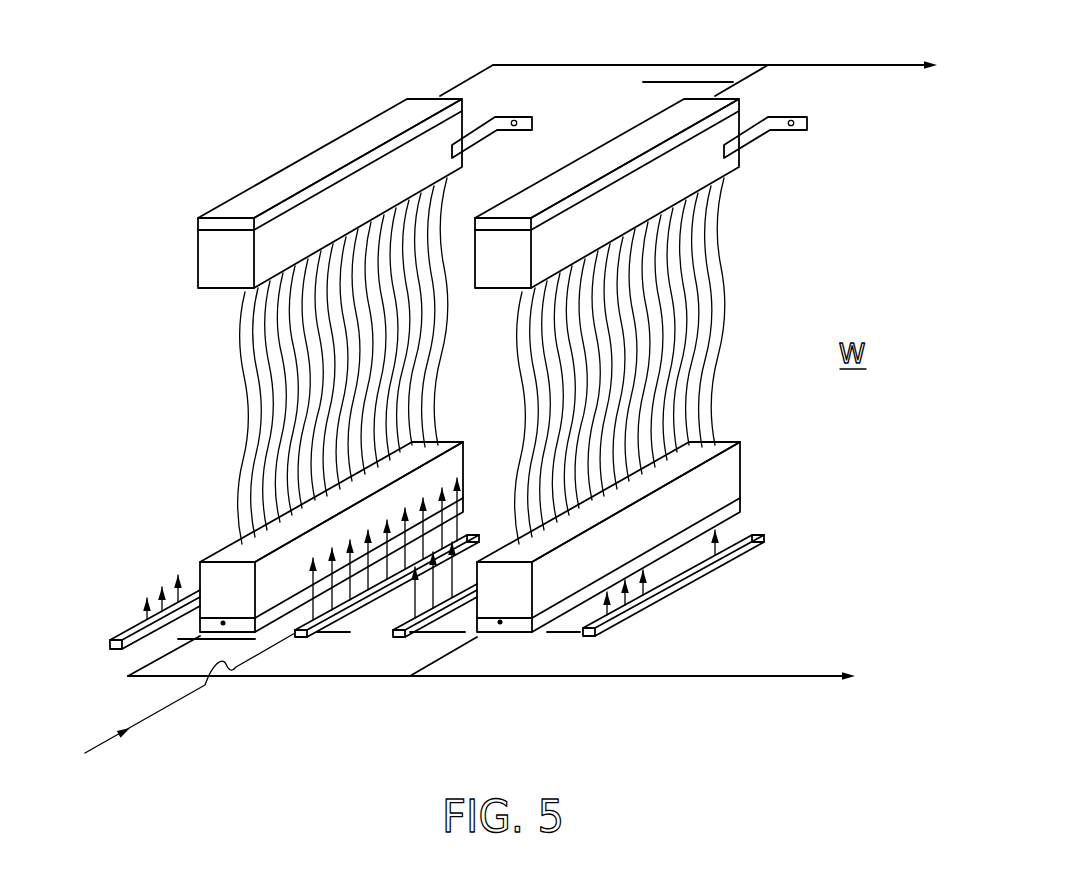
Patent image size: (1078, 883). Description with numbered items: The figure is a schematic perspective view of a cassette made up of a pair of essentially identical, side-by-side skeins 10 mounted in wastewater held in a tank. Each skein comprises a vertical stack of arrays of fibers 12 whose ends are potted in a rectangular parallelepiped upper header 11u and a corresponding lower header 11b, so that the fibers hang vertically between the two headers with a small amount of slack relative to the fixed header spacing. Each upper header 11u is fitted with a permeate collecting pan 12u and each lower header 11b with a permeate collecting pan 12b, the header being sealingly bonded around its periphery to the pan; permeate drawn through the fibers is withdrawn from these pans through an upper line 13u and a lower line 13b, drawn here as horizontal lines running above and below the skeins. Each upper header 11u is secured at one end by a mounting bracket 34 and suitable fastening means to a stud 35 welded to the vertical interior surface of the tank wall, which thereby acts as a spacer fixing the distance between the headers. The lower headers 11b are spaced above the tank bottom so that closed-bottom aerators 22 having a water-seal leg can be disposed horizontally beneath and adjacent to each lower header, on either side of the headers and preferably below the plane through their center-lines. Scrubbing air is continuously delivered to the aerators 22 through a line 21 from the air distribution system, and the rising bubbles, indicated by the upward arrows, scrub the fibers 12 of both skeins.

The skein 10 is at (318, 118).
The upper header 11u is at (302, 222).
The upper permeate collecting pan 12u is at (197, 226).
The fibers 12 is at (247, 344).
The lower header 11b is at (200, 568).
The lower permeate collecting pan 12b is at (263, 615).
The upper permeate line 13u is at (450, 90).
The lower permeate line 13b is at (477, 638).
The air line 21 is at (265, 652).
The aerators 22 is at (123, 630).
The mounting bracket 34 is at (477, 137).
The stud 35 is at (514, 118).